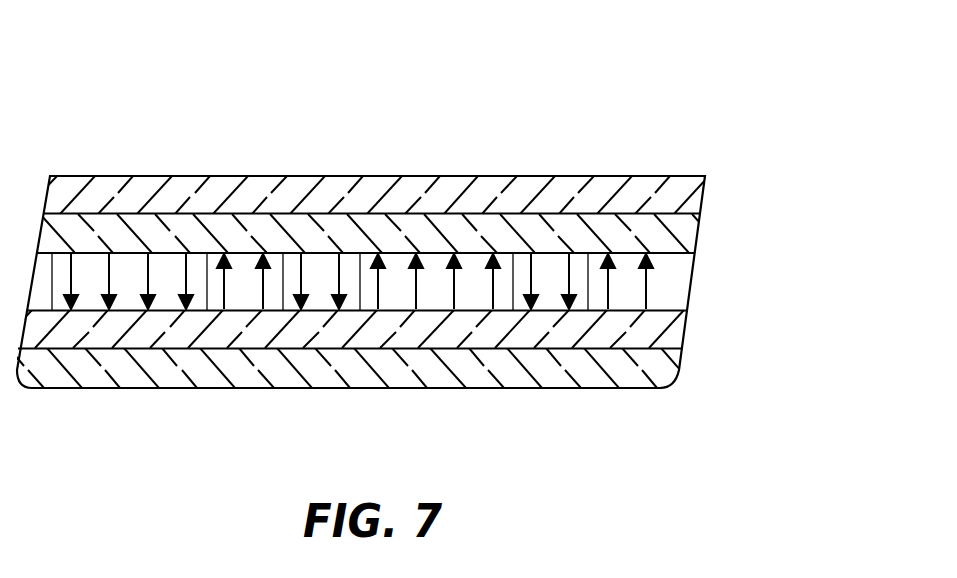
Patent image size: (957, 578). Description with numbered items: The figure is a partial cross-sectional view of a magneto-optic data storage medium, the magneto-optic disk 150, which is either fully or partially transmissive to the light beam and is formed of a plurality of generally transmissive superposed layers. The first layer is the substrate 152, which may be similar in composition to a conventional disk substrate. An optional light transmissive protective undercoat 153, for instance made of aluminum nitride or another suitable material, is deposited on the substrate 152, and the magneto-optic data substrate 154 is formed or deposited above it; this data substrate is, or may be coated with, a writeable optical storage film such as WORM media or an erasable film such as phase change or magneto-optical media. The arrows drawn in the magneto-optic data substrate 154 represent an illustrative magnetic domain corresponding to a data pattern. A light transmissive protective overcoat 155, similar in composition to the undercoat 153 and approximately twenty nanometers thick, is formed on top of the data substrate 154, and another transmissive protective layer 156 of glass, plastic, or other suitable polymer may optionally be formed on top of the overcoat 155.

The magneto-optic disk 150 is at (599, 102).
The substrate 152 is at (675, 361).
The protective undercoat 153 is at (680, 319).
The magneto-optic data substrate 154 is at (684, 278).
The protective overcoat 155 is at (690, 227).
The protective layer 156 is at (699, 181).